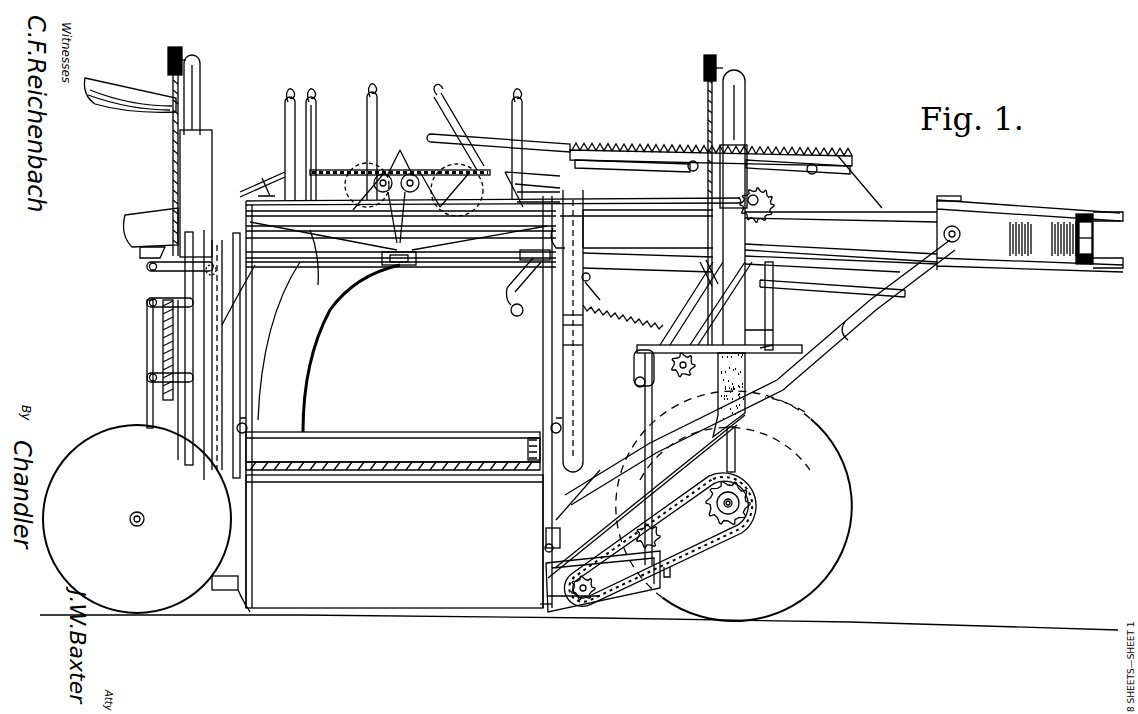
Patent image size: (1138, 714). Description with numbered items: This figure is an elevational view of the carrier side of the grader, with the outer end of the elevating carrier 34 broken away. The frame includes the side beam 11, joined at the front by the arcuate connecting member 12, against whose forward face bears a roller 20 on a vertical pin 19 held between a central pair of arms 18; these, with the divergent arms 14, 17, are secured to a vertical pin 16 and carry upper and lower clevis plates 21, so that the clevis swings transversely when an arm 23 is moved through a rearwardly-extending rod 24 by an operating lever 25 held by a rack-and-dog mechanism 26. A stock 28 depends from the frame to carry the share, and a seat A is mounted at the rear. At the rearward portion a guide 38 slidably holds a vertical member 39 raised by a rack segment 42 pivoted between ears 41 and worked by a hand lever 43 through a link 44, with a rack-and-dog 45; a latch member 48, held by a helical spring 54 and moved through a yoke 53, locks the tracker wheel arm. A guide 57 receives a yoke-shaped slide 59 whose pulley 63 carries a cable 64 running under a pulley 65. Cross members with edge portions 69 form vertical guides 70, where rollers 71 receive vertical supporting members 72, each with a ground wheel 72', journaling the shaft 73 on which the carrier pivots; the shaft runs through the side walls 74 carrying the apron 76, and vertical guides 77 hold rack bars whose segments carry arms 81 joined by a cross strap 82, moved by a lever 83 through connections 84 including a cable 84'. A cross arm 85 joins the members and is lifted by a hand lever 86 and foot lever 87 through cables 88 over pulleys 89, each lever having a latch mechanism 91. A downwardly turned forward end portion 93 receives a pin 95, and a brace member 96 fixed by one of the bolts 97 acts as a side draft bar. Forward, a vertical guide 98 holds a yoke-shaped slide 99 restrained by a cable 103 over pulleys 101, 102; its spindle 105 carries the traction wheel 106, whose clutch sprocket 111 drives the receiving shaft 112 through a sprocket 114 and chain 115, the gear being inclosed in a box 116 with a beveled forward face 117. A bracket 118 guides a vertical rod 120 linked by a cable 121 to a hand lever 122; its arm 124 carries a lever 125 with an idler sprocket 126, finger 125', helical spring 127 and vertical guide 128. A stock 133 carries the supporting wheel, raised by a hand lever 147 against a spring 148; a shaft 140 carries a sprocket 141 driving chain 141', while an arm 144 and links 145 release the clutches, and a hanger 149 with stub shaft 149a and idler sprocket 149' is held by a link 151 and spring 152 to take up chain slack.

The seat A is at (99, 108).
The side beam 11 is at (760, 236).
The arcuate connecting member 12 is at (1050, 262).
The forwardly extending arms 14 is at (986, 204).
The vertical pin 16 is at (948, 196).
The forwardly extending arms 17 is at (1006, 208).
The central pair of arms 18 is at (1088, 213).
The vertical pin 19 is at (1093, 232).
The roller 20 is at (1093, 245).
The clevis plates 21 is at (1112, 212).
The arm 23 is at (945, 262).
The rearwardly-extending rod 24 is at (838, 282).
The operating lever 25 is at (511, 301).
The rack-and-dog mechanism 26 is at (522, 180).
The stock 28 is at (308, 342).
The elevating carrier 34 is at (394, 541).
The guide 38 is at (170, 340).
The vertical member 39 is at (178, 392).
The rearwardly extending ears 41 is at (286, 140).
The rack segment 42 is at (140, 244).
The hand lever 43 is at (288, 147).
The link 44 is at (155, 208).
The rack-and-dog 45 is at (266, 185).
The latch member 48 is at (150, 412).
The yoke 53 is at (150, 301).
The helical spring 54 is at (165, 317).
The guide 57 is at (180, 154).
The yoke-shaped slide 59 is at (202, 96).
The pulley 63 is at (168, 56).
The cable 64 is at (172, 80).
The pulley 65 is at (147, 265).
The edge portions 69 is at (252, 270).
The vertical guides 70 is at (240, 346).
The rollers 71 is at (185, 272).
The vertical supporting members 72 is at (421, 355).
The ground wheel 72' is at (381, 614).
The shaft 73 is at (256, 612).
The side walls 74 is at (268, 398).
The apron 76 is at (400, 434).
The vertical guides 77 is at (248, 426).
The upwardly extending arms 81 is at (300, 264).
The cross strap 82 is at (443, 232).
The lever 83 is at (379, 136).
The connections 84 is at (351, 348).
The cable 84' is at (398, 257).
The cross arm 85 is at (322, 270).
The hand lever 86 is at (317, 140).
The foot lever 87 is at (448, 170).
The cables 88 is at (352, 168).
The pulleys 89 is at (400, 155).
The latch mechanism 91 is at (479, 136).
The downwardly turned forward end portion 93 is at (546, 536).
The pin 95 is at (578, 526).
The brace member 96 is at (856, 339).
The bolts 97 is at (951, 244).
The vertical guide 98 is at (750, 158).
The yoke-shaped slide 99 is at (746, 108).
The pulley 101 is at (704, 62).
The pulley 102 is at (700, 270).
The cable 103 is at (708, 106).
The spindle 105 is at (742, 503).
The traction wheel 106 is at (850, 545).
The sprocket 111 is at (750, 524).
The receiving shaft 112 is at (586, 606).
The sprocket 114 is at (566, 606).
The chain 115 is at (742, 548).
The box 116 is at (626, 602).
The beveled forward face 117 is at (660, 596).
The bracket 118 is at (772, 258).
The vertical rod 120 is at (773, 316).
The cable 121 is at (686, 210).
The hand lever 122 is at (452, 102).
The arm 124 is at (635, 381).
The lever 125 is at (630, 382).
The finger 125' is at (671, 459).
The idler sprocket 126 is at (662, 536).
The helical spring 127 is at (810, 413).
The vertical guide 128 is at (758, 420).
The stock 133 is at (868, 316).
The shaft 140 is at (767, 205).
The sprocket 141 is at (841, 233).
The chain 141' is at (832, 263).
The arm 144 is at (700, 310).
The links 145 is at (760, 343).
The hand lever 147 is at (596, 148).
The spring 148 is at (657, 148).
The hanger 149 is at (683, 303).
The idler sprocket 149' is at (648, 365).
The stub shaft 149a is at (718, 392).
The link 151 is at (563, 328).
The spring 152 is at (616, 340).